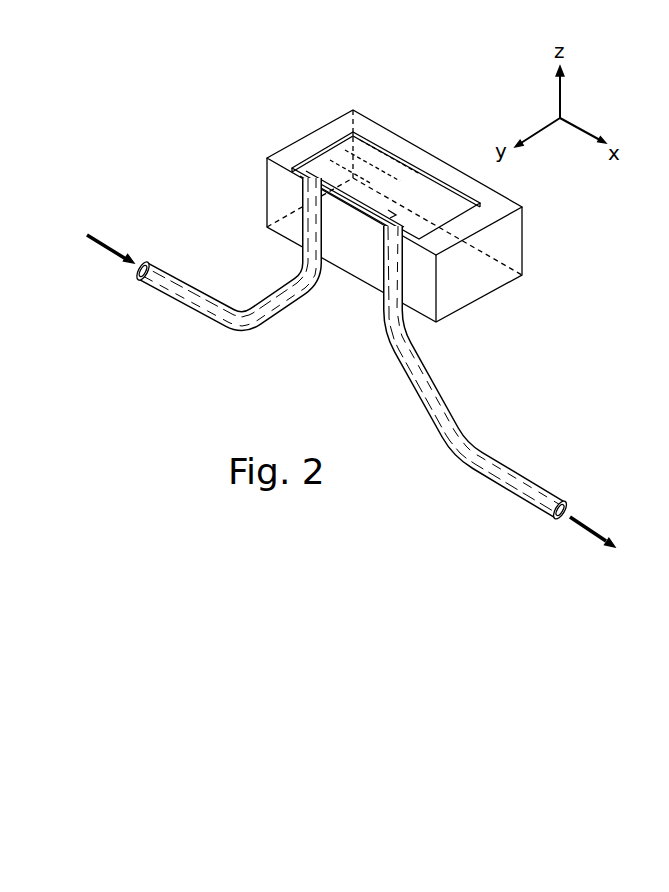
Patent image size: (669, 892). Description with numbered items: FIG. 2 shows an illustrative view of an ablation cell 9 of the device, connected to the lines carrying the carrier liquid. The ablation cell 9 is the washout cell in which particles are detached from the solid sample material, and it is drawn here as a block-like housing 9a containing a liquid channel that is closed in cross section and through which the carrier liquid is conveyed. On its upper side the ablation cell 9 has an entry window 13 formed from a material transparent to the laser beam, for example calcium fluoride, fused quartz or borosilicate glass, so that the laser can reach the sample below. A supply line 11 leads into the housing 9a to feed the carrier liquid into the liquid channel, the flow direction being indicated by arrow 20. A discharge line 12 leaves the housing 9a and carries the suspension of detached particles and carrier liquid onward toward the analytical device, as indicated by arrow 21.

The ablation cell 9 is at (279, 119).
The housing 9a is at (483, 210).
The entry window 13 is at (367, 163).
The supply line 11 is at (183, 321).
The discharge line 12 is at (496, 504).
The arrow 20 is at (112, 250).
The arrow 21 is at (597, 522).